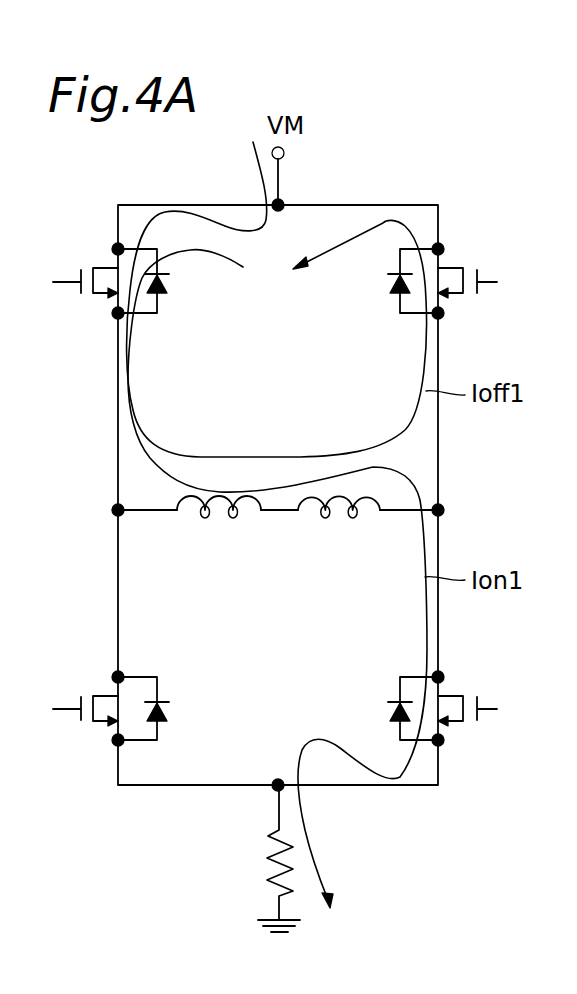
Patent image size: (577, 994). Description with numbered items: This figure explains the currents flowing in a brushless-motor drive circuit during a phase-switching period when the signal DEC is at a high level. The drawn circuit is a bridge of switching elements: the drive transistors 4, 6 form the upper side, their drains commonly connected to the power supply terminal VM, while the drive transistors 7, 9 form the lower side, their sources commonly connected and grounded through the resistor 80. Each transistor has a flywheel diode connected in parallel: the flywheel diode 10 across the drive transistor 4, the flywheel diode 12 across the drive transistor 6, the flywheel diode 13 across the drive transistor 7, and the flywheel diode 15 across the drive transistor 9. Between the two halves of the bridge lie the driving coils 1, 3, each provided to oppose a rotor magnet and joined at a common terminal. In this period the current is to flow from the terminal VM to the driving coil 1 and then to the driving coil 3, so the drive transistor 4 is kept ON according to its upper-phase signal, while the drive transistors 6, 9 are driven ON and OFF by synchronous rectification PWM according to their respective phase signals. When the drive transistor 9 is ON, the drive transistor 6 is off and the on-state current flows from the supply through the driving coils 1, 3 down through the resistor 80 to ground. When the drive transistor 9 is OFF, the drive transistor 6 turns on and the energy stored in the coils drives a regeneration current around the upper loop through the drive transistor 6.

The drive transistor 4 is at (112, 268).
The drive transistor 6 is at (445, 267).
The drive transistor 7 is at (113, 694).
The drive transistor 9 is at (446, 694).
The flywheel diode 10 is at (158, 298).
The flywheel diode 12 is at (393, 298).
The flywheel diode 13 is at (161, 702).
The flywheel diode 15 is at (395, 702).
The driving coil 1 is at (215, 518).
The driving coil 3 is at (337, 518).
The resistor 80 is at (268, 857).